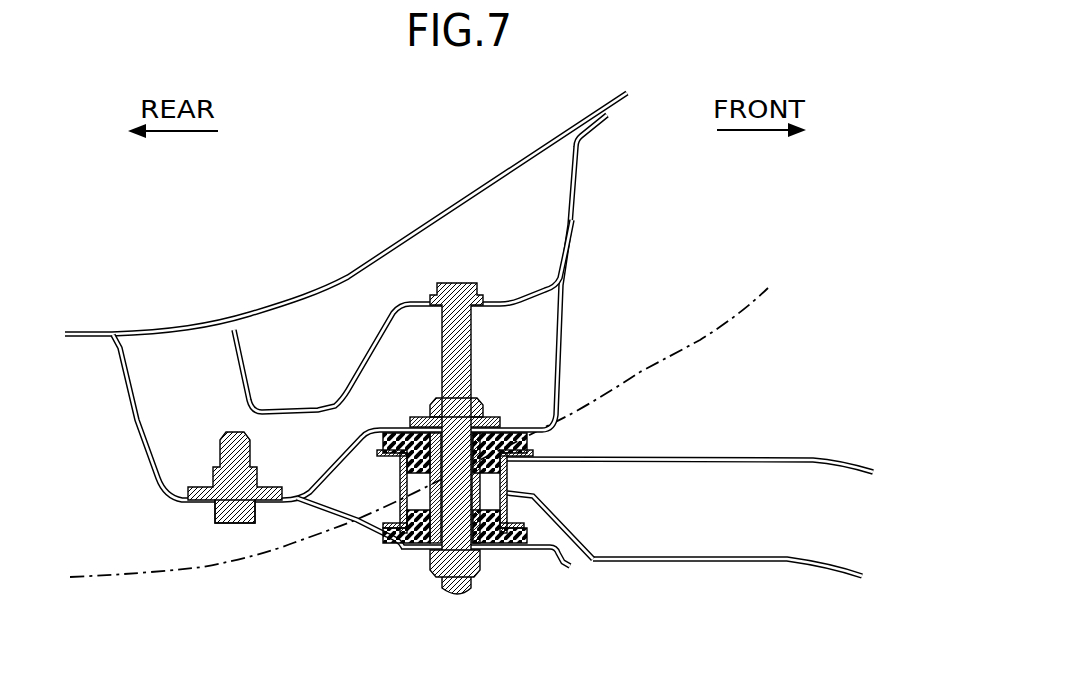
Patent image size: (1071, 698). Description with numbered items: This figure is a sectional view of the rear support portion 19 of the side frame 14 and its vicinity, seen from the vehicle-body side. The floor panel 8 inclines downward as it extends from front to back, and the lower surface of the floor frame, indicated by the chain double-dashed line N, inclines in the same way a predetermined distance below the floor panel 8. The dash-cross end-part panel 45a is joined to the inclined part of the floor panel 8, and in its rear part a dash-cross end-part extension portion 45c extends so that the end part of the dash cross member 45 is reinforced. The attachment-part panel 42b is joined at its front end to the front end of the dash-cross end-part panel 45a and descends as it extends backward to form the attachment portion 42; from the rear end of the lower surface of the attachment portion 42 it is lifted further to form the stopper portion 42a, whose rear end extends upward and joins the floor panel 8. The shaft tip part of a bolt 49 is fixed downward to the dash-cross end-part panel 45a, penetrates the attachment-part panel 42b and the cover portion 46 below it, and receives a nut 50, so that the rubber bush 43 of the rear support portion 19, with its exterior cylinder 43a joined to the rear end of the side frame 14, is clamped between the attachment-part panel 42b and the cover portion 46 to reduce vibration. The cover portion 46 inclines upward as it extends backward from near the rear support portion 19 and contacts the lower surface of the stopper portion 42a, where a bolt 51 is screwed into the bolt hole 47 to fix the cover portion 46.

The floor panel 8 is at (503, 175).
The side frame 14 is at (685, 458).
The rear support portion 19 is at (502, 573).
The attachment portion 42 is at (388, 444).
The stopper portion 42a is at (315, 500).
The attachment-part panel 42b is at (337, 457).
The rubber bush 43 is at (594, 524).
The exterior cylinder 43a is at (640, 561).
The dash cross member 45 is at (464, 272).
The dash-cross end-part panel 45a is at (577, 175).
The dash-cross end-part extension portion 45c is at (337, 400).
The cover portion 46 is at (342, 513).
The bolt hole 47 is at (218, 478).
The bolt 49 is at (478, 357).
The nut 50 is at (437, 557).
The bolt 51 is at (237, 523).
The chain double-dashed line N is at (670, 357).